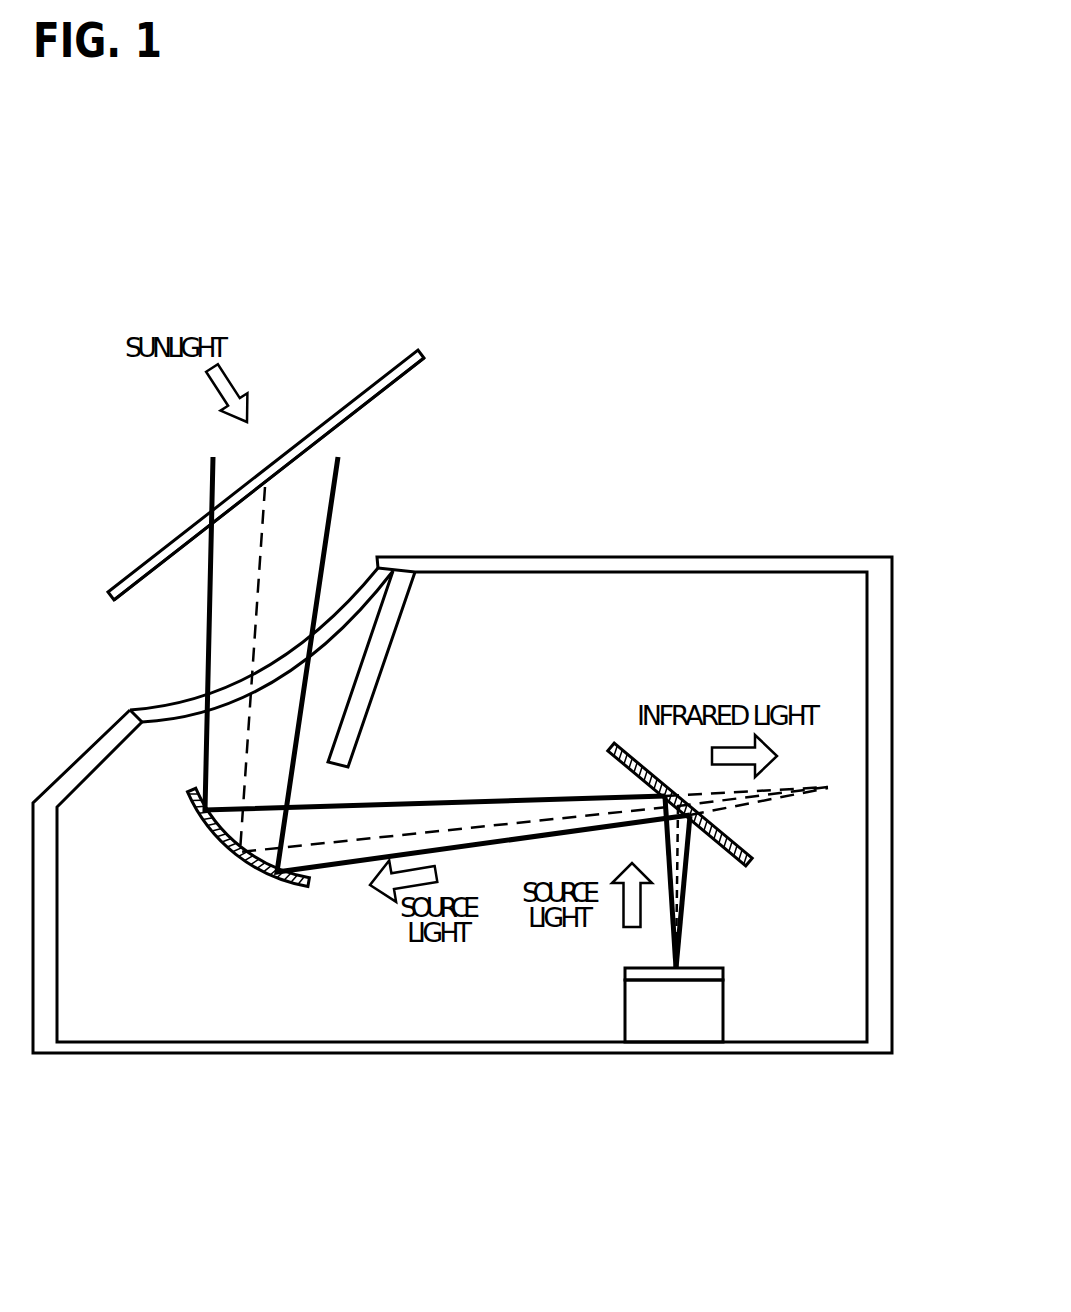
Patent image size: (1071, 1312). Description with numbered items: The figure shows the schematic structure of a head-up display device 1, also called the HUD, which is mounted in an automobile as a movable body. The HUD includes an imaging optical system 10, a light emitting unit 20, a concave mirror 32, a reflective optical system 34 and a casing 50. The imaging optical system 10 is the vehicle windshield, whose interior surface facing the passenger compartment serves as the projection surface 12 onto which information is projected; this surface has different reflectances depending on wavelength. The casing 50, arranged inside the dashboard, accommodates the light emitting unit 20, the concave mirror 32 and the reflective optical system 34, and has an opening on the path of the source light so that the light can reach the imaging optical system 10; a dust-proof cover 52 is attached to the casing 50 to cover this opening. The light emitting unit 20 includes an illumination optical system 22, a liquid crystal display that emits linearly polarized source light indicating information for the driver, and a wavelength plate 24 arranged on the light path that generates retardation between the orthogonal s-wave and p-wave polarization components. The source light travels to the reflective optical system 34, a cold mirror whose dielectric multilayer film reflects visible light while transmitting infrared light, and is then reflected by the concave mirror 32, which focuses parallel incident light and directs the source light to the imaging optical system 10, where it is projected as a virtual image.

The head-up display device 1 is at (493, 254).
The imaging optical system 10 is at (358, 388).
The projection surface 12 is at (337, 433).
The light emitting unit 20 is at (717, 1089).
The illumination optical system 22 is at (682, 1023).
The wavelength plate 24 is at (710, 975).
The concave mirror 32 is at (248, 875).
The reflective optical system 34 is at (745, 842).
The casing 50 is at (520, 563).
The dust-proof cover 52 is at (157, 708).